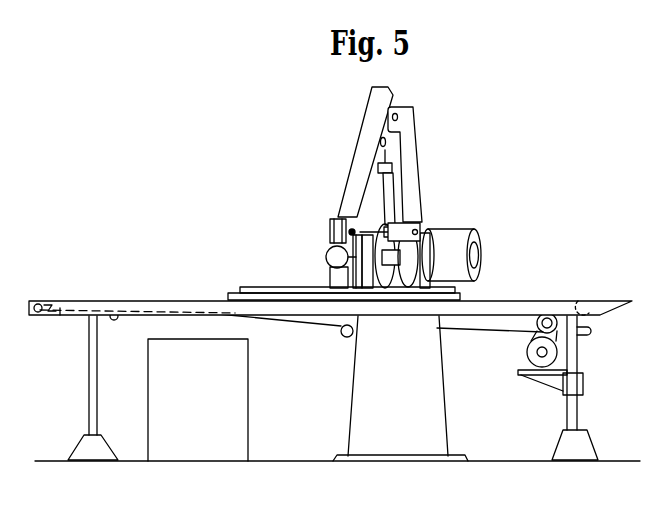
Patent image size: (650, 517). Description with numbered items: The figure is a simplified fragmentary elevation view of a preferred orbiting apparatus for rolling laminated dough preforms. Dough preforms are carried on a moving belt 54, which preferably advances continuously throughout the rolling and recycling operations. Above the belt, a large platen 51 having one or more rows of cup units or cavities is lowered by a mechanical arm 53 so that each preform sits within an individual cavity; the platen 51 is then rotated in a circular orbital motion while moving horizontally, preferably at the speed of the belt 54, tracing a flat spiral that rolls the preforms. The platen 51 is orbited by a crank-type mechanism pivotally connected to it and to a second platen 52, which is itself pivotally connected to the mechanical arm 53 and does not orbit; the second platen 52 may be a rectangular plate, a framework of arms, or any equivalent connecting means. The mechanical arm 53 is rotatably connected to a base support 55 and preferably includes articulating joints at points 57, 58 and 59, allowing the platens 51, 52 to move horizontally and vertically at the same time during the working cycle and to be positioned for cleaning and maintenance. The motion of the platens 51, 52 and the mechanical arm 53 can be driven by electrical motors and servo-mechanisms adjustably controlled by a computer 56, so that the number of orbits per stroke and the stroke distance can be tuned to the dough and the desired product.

The platen 51 is at (240, 293).
The second platen 52 is at (272, 287).
The mechanical arm 53 is at (348, 107).
The moving belt 54 is at (156, 300).
The base support 55 is at (409, 398).
The computer 56 is at (207, 403).
The articulating joint 57 is at (353, 230).
The articulating joint 58 is at (399, 117).
The articulating joint 59 is at (414, 231).